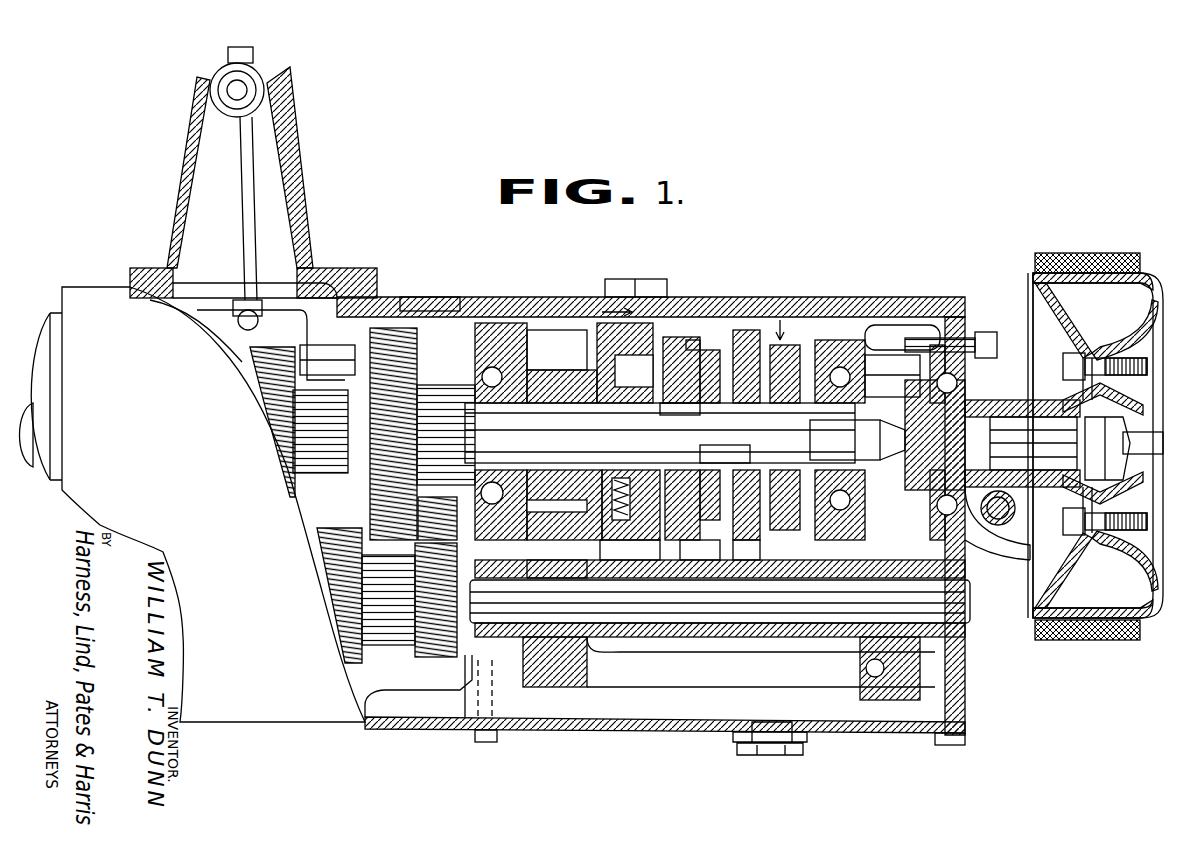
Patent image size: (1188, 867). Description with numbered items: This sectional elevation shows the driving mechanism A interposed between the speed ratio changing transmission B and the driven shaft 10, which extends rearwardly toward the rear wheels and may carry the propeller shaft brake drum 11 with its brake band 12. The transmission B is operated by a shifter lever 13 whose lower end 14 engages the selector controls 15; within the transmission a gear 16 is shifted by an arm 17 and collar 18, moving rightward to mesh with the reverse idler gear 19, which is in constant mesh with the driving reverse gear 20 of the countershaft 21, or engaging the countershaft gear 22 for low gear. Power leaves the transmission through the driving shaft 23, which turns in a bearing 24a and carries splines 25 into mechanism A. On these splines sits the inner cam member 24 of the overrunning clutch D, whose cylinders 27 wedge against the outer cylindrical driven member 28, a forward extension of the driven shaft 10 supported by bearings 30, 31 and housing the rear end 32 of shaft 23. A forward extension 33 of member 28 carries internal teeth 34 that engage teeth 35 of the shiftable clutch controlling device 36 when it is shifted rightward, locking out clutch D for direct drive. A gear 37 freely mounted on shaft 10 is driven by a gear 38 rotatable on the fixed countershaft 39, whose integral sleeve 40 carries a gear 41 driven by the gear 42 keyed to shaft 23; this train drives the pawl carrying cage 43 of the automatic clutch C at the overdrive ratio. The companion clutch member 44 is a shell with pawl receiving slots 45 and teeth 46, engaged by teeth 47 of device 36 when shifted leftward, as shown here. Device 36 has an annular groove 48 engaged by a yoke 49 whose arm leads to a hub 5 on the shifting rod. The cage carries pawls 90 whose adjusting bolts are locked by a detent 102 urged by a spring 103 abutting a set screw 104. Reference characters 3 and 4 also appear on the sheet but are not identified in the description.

The spring 3 is at (630, 520).
The shift direction arrow 4 is at (788, 552).
The hub 5 is at (615, 319).
The driven shaft 10 is at (985, 425).
The propeller shaft brake drum 11 is at (1135, 300).
The brake band 12 is at (1105, 256).
The shifter lever 13 is at (255, 55).
The lower end 14 is at (265, 292).
The selector controls 15 is at (318, 350).
The gear 16 is at (420, 332).
The arm 17 is at (370, 298).
The collar 18 is at (345, 490).
The reverse idler gear 19 is at (440, 500).
The driving reverse gear 20 is at (455, 657).
The countershaft 21 is at (388, 600).
The countershaft gear 22 is at (350, 662).
The driving shaft 23 is at (440, 400).
The inner cam member 24 is at (780, 400).
The bearing 24a is at (494, 368).
The splines 25 is at (857, 440).
The cylinders 27 is at (805, 560).
The outer cylindrical driven member 28 is at (765, 340).
The bearing 30 is at (862, 378).
The bearing 31 is at (905, 340).
The rear end 32 is at (905, 425).
The forward extension 33 is at (750, 560).
The internal teeth 34 is at (728, 370).
The teeth 35 is at (725, 520).
The shiftable clutch controlling device 36 is at (724, 447).
The gear 37 is at (545, 355).
The gear 38 is at (578, 688).
The fixed countershaft 39 is at (975, 608).
The sleeve 40 is at (680, 640).
The gear 41 is at (860, 695).
The gear 42 is at (905, 380).
The pawl carrying cage 43 is at (590, 356).
The companion clutch member 44 is at (690, 340).
The pawl receiving slots 45 is at (620, 350).
The teeth 46 is at (634, 371).
The teeth 47 is at (692, 360).
The annular groove 48 is at (685, 398).
The yoke 49 is at (692, 560).
The pawls 90 is at (643, 340).
The detent 102 is at (630, 558).
The spring 103 is at (557, 581).
The set screw 104 is at (605, 520).
The driving mechanism A is at (780, 320).
The speed ratio changing transmission B is at (410, 298).
The automatic clutch C is at (655, 352).
The overrunning clutch D is at (835, 365).